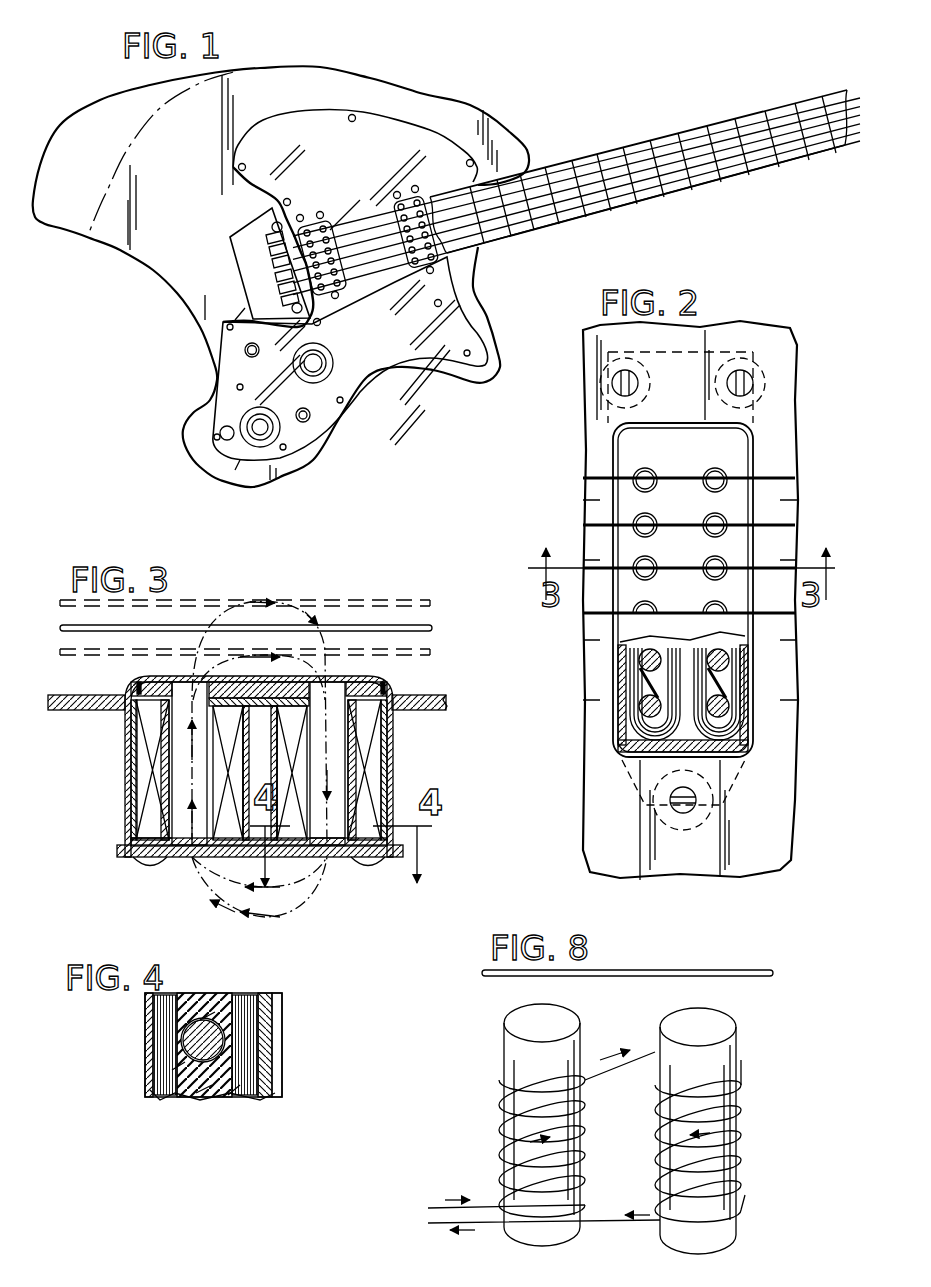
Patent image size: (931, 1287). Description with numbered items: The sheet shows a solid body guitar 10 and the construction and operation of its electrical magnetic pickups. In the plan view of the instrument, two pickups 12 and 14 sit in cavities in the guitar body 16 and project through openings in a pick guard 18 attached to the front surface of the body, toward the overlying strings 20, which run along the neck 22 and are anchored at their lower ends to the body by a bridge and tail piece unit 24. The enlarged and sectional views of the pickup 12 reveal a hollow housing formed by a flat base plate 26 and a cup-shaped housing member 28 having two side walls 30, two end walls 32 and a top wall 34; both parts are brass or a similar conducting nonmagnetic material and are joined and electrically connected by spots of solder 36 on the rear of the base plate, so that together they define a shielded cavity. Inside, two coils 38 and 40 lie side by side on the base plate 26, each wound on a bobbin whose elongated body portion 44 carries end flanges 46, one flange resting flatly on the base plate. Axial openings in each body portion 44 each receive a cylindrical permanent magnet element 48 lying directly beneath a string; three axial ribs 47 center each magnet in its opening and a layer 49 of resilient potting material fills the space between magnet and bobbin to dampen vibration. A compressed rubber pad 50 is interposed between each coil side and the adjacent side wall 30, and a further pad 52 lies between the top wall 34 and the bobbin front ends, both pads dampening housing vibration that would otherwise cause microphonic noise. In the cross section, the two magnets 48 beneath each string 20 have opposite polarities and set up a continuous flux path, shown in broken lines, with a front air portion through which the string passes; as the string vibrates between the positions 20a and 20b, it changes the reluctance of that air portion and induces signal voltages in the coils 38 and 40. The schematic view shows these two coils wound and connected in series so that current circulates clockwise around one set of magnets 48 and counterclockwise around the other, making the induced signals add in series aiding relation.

In FIG. 1, the solid body guitar 10 is at (408, 87).
In FIG. 1, the electrical magnetic pickup 12 is at (330, 295).
In FIG. 2, the electrical magnetic pickup 12 is at (760, 440).
In FIG. 3, the electrical magnetic pickup 12 is at (393, 708).
In FIG. 1, the electrical magnetic pickup 14 is at (424, 264).
In FIG. 1, the guitar body 16 is at (480, 118).
In FIG. 1, the pick guard 18 is at (366, 372).
In FIG. 2, the pick guard 18 is at (780, 833).
In FIG. 3, the pick guard 18 is at (430, 700).
In FIG. 1, the string 20 is at (622, 130).
In FIG. 2, the string 20 is at (765, 520).
In FIG. 3, the string 20 is at (418, 626).
In FIG. 8, the string 20 is at (695, 970).
In FIG. 3, the broken line showing of string 20a is at (398, 597).
In FIG. 3, the broken line showing of string 20b is at (420, 656).
In FIG. 1, the neck 22 is at (600, 214).
In FIG. 1, the bridge and tail piece unit 24 is at (240, 235).
In FIG. 2, the base plate 26 is at (722, 814).
In FIG. 3, the base plate 26 is at (345, 857).
In FIG. 2, the cup-shaped housing member 28 is at (748, 455).
In FIG. 3, the cup-shaped housing member 28 is at (381, 760).
In FIG. 4, the cup-shaped housing member 28 is at (282, 1040).
In FIG. 3, the side wall 30 is at (125, 752).
In FIG. 2, the end wall 32 is at (670, 425).
In FIG. 3, the top wall 34 is at (150, 676).
In FIG. 3, the spot of solder 36 is at (145, 864).
In FIG. 2, the electrical coil 38 is at (628, 735).
In FIG. 3, the electrical coil 38 is at (150, 790).
In FIG. 8, the electrical coil 38 is at (598, 1205).
In FIG. 2, the electrical coil 40 is at (742, 738).
In FIG. 3, the electrical coil 40 is at (380, 742).
In FIG. 4, the electrical coil 40 is at (245, 1000).
In FIG. 8, the electrical coil 40 is at (745, 1195).
In FIG. 2, the body portion 44 is at (640, 675).
In FIG. 3, the body portion 44 is at (260, 773).
In FIG. 4, the body portion 44 is at (215, 1005).
In FIG. 3, the end flange 46 is at (137, 696).
In FIG. 4, the axial rib 47 is at (178, 1005).
In FIG. 2, the permanent magnet element 48 is at (640, 712).
In FIG. 3, the permanent magnet element 48 is at (192, 848).
In FIG. 4, the permanent magnet element 48 is at (203, 1025).
In FIG. 8, the permanent magnet element 48 is at (505, 1045).
In FIG. 4, the layer of resilient material 49 is at (213, 1095).
In FIG. 3, the pad 50 is at (134, 775).
In FIG. 4, the pad 50 is at (262, 1030).
In FIG. 3, the pad 52 is at (368, 680).